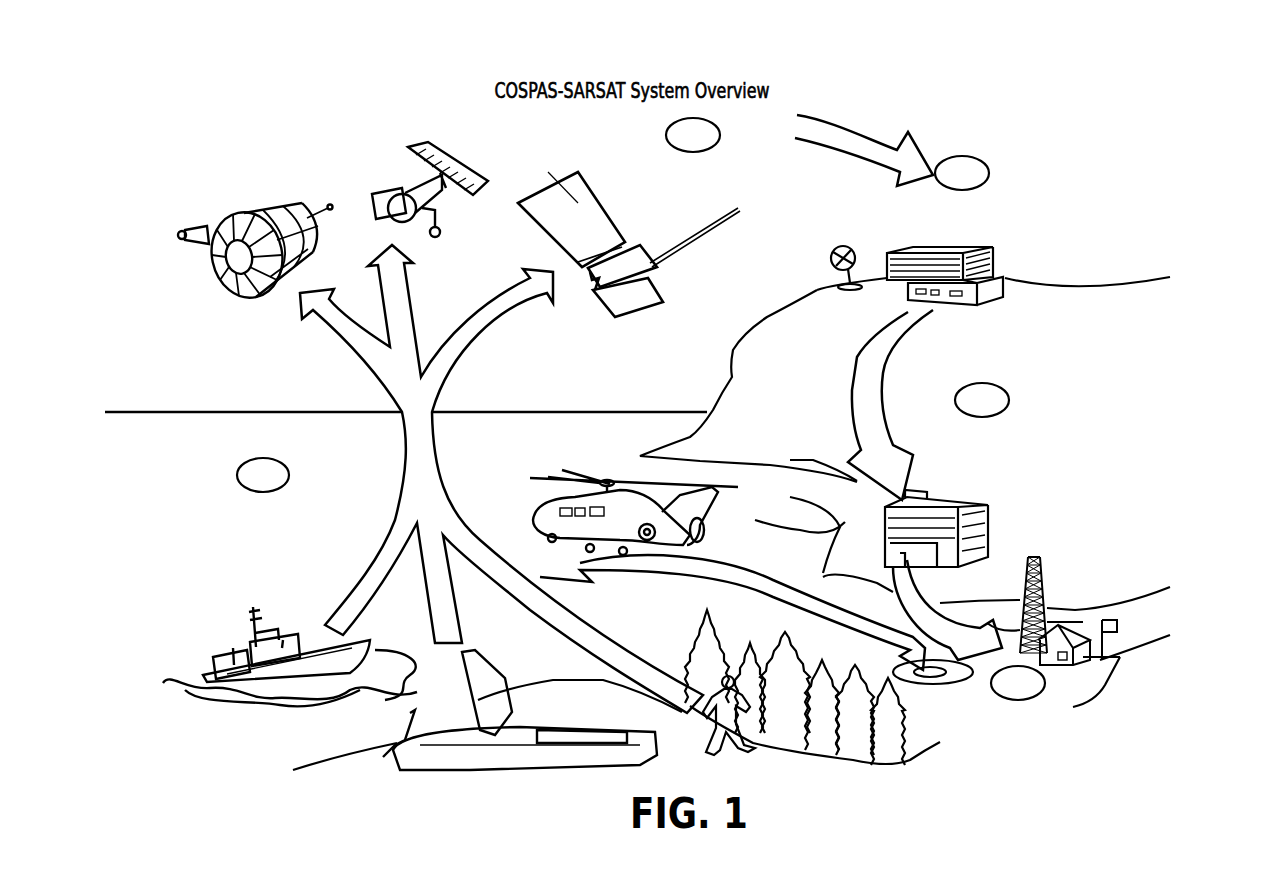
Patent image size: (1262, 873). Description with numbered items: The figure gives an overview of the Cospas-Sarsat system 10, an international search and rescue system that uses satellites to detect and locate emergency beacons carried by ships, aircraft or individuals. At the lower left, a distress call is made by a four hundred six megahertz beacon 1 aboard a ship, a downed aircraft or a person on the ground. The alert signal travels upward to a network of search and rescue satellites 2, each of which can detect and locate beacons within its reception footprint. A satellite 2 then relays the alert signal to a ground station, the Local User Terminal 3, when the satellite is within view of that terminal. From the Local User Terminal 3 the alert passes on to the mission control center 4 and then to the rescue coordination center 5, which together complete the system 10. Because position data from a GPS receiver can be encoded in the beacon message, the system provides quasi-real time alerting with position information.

The 406 MHz beacon 1 is at (337, 677).
The satellite 2 is at (577, 203).
The Local User Terminal 3 is at (1005, 278).
The mission control center 4 is at (997, 520).
The rescue coordination center 5 is at (1120, 657).
The Cospas-Sarsat system 10 is at (978, 53).